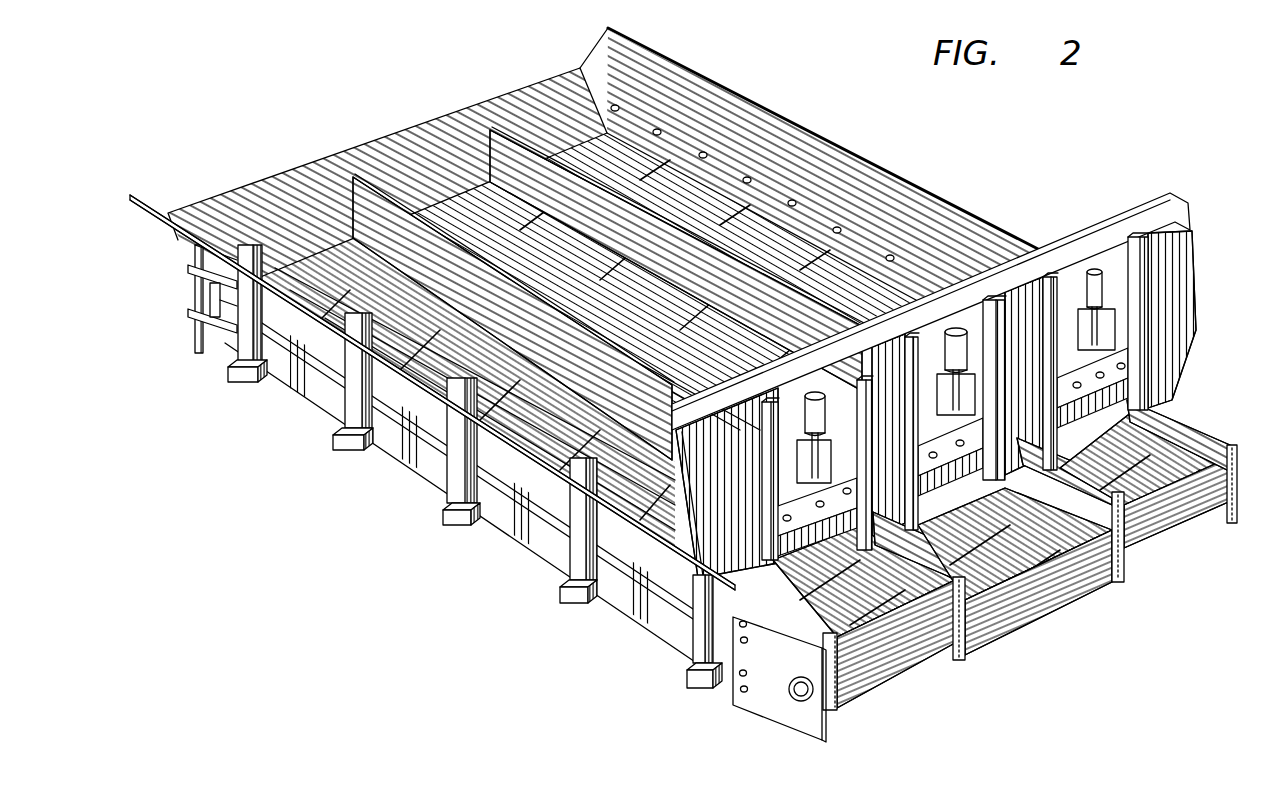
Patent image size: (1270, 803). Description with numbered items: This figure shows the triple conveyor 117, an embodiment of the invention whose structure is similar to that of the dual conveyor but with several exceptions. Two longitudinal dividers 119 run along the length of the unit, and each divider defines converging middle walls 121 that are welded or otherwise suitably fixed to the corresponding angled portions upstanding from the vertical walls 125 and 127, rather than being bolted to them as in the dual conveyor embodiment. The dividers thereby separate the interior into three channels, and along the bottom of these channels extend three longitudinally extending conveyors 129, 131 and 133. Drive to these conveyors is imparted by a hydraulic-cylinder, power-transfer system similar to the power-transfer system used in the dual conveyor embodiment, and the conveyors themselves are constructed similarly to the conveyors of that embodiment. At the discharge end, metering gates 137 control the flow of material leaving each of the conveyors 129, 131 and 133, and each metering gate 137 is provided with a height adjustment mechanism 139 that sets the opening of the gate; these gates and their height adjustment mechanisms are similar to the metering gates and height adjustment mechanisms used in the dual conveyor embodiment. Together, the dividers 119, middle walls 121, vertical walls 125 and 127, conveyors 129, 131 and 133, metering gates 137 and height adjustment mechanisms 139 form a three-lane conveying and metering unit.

The triple conveyor 117 is at (393, 487).
The longitudinal divider 119 is at (492, 129).
The converging middle wall 121 is at (500, 304).
The vertical wall 125 is at (947, 661).
The vertical wall 127 is at (966, 650).
The bottom longitudinally extending conveyor 129 is at (906, 682).
The bottom longitudinally extending conveyor 131 is at (1062, 588).
The bottom longitudinally extending conveyor 133 is at (1183, 540).
The metering gate 137 is at (1112, 365).
The height adjustment mechanism 139 is at (1080, 276).